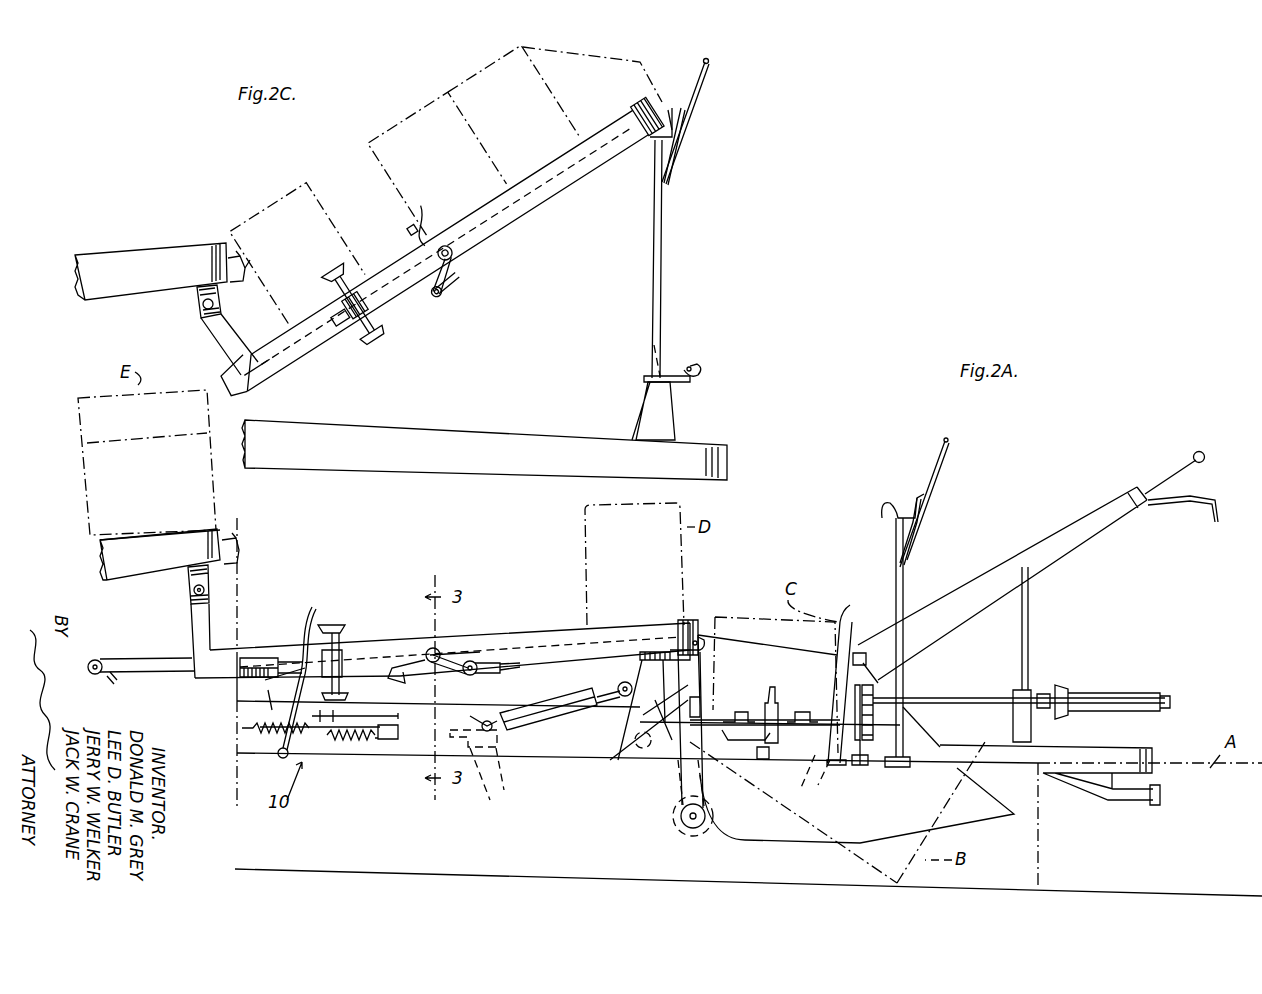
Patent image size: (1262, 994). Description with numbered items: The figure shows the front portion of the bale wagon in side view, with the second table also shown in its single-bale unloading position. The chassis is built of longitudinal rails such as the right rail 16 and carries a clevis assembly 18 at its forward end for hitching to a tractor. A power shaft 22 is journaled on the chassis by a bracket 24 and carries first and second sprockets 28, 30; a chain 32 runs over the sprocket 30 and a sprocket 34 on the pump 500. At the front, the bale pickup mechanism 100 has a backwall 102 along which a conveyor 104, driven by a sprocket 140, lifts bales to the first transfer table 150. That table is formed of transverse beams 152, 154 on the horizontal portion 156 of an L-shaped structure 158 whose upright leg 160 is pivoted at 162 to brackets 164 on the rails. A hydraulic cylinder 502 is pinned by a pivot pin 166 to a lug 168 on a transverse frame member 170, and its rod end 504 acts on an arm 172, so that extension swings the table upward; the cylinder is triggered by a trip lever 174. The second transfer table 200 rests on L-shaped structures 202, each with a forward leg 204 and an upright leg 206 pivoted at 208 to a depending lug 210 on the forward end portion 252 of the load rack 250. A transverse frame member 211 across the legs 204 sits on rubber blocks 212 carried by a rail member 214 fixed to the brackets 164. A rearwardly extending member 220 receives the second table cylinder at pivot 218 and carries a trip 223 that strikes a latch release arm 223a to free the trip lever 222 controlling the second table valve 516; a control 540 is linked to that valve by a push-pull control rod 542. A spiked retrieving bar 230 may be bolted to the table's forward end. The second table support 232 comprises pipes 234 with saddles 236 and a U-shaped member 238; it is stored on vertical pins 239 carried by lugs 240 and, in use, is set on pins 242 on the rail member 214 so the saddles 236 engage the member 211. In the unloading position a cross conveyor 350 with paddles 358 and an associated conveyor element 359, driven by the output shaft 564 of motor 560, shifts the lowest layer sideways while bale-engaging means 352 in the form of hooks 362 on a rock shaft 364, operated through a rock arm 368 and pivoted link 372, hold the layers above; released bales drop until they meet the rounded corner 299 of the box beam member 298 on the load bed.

In FIG. 2C, the right rail 16 is at (418, 470).
In FIG. 2A, the clevis assembly 18 is at (1171, 769).
In FIG. 2A, the power shaft 22 is at (975, 696).
In FIG. 2A, the bracket 24 is at (1032, 730).
In FIG. 2A, the first sprocket 28 is at (880, 697).
In FIG. 2A, the second sprocket 30 is at (838, 650).
In FIG. 2A, the chain 32 is at (878, 708).
In FIG. 2A, the sprocket 34 is at (862, 768).
In FIG. 2A, the bale pickup mechanism 100 is at (774, 847).
In FIG. 2A, the backwall 102 is at (692, 830).
In FIG. 2A, the conveyor 104 is at (678, 812).
In FIG. 2A, the sprocket 140 is at (745, 668).
In FIG. 2A, the first transfer table 150 is at (793, 754).
In FIG. 2A, the transversely extending beam 152 is at (805, 712).
In FIG. 2A, the transversely extending beam 154 is at (738, 712).
In FIG. 2A, the forwardly extending horizontal portion 156 is at (680, 796).
In FIG. 2A, the L-shaped structure 158 is at (659, 754).
In FIG. 2A, the rear upwardly extending leg portion 160 is at (622, 683).
In FIG. 2A, the pivot 162 is at (640, 654).
In FIG. 2C, the brackets 164 is at (676, 420).
In FIG. 2A, the brackets 164 is at (640, 712).
In FIG. 2A, the pivot pin 166 is at (492, 750).
In FIG. 2A, the forwardly extending lug 168 is at (483, 720).
In FIG. 2A, the transverse frame member 170 is at (490, 800).
In FIG. 2A, the arm 172 is at (630, 702).
In FIG. 2A, the trip lever 174 is at (772, 687).
In FIG. 2C, the second transfer table 200 is at (491, 243).
In FIG. 2A, the second transfer table 200 is at (548, 620).
In FIG. 2C, the L-shaped structures 202 is at (258, 370).
In FIG. 2A, the L-shaped structures 202 is at (205, 681).
In FIG. 2A, the forwardly extending leg portion 204 is at (660, 625).
In FIG. 2C, the upwardly extending rear leg portion 206 is at (218, 337).
In FIG. 2A, the upwardly extending rear leg portion 206 is at (192, 615).
In FIG. 2C, the pivot 208 is at (202, 305).
In FIG. 2A, the pivot 208 is at (213, 585).
In FIG. 2A, the depending lug 210 is at (193, 590).
In FIG. 2C, the transverse frame member 211 is at (676, 136).
In FIG. 2C, the rubber blocks 212 is at (702, 367).
In FIG. 2A, the rubber blocks 212 is at (695, 637).
In FIG. 2C, the transversely extending rail member 214 is at (690, 382).
In FIG. 2A, the transversely extending rail member 214 is at (655, 653).
In FIG. 2A, the pivot 218 is at (100, 660).
In FIG. 2C, the rearwardly extending member 220 is at (236, 392).
In FIG. 2A, the rearwardly extending member 220 is at (140, 672).
In FIG. 2A, the trip lever 222 is at (310, 606).
In FIG. 2A, the trip 223 is at (118, 684).
In FIG. 2A, the latch release arm 223a is at (292, 687).
In FIG. 2C, the spiked retrieving bar 230 is at (670, 108).
In FIG. 2C, the second table support 232 is at (683, 211).
In FIG. 2A, the second table support 232 is at (894, 499).
In FIG. 2C, the vertically extending pipes 234 is at (663, 278).
In FIG. 2A, the vertically extending pipes 234 is at (896, 592).
In FIG. 2A, the saddles 236 is at (882, 520).
In FIG. 2C, the U-shaped member 238 is at (700, 96).
In FIG. 2A, the U-shaped member 238 is at (950, 462).
In FIG. 2A, the vertical pins 239 is at (945, 738).
In FIG. 2A, the lugs 240 is at (905, 768).
In FIG. 2C, the pins 242 is at (664, 350).
In FIG. 2A, the pins 242 is at (540, 628).
In FIG. 2A, the load rack 250 is at (82, 557).
In FIG. 2C, the forward end portion 252 is at (165, 255).
In FIG. 2A, the forward end portion 252 is at (160, 540).
In FIG. 2C, the box beam member 298 is at (248, 275).
In FIG. 2A, the box beam member 298 is at (242, 552).
In FIG. 2C, the upper rounded corner 299 is at (248, 258).
In FIG. 2A, the upper rounded corner 299 is at (240, 538).
In FIG. 2C, the cross conveyor 350 is at (347, 260).
In FIG. 2A, the cross conveyor 350 is at (341, 617).
In FIG. 2C, the bale-engaging means 352 is at (447, 219).
In FIG. 2A, the bale-engaging means 352 is at (456, 644).
In FIG. 2C, the paddles 358 is at (350, 262).
In FIG. 2A, the paddles 358 is at (342, 625).
In FIG. 2C, the valve foot 359 is at (378, 340).
In FIG. 2A, the valve foot 359 is at (335, 696).
In FIG. 2C, the hooks 362 is at (418, 212).
In FIG. 2A, the hooks 362 is at (405, 664).
In FIG. 2C, the rock shaft 364 is at (468, 266).
In FIG. 2A, the rock shaft 364 is at (466, 640).
In FIG. 2C, the rock arm 368 is at (436, 290).
In FIG. 2A, the rock arm 368 is at (465, 675).
In FIG. 2C, the pivoted link 372 is at (462, 280).
In FIG. 2A, the pivoted link 372 is at (515, 666).
In FIG. 2A, the pump 500 is at (818, 785).
In FIG. 2A, the hydraulic cylinder 502 is at (545, 705).
In FIG. 2A, the rod end 504 is at (600, 702).
In FIG. 2A, the second table valve 516 is at (395, 748).
In FIG. 2A, the control 540 is at (1203, 450).
In FIG. 2A, the push-pull control rod 542 is at (360, 714).
In FIG. 2A, the rotary hydraulic motor 560 is at (252, 656).
In FIG. 2C, the output shaft 564 is at (338, 328).
In FIG. 2A, the output shaft 564 is at (292, 660).